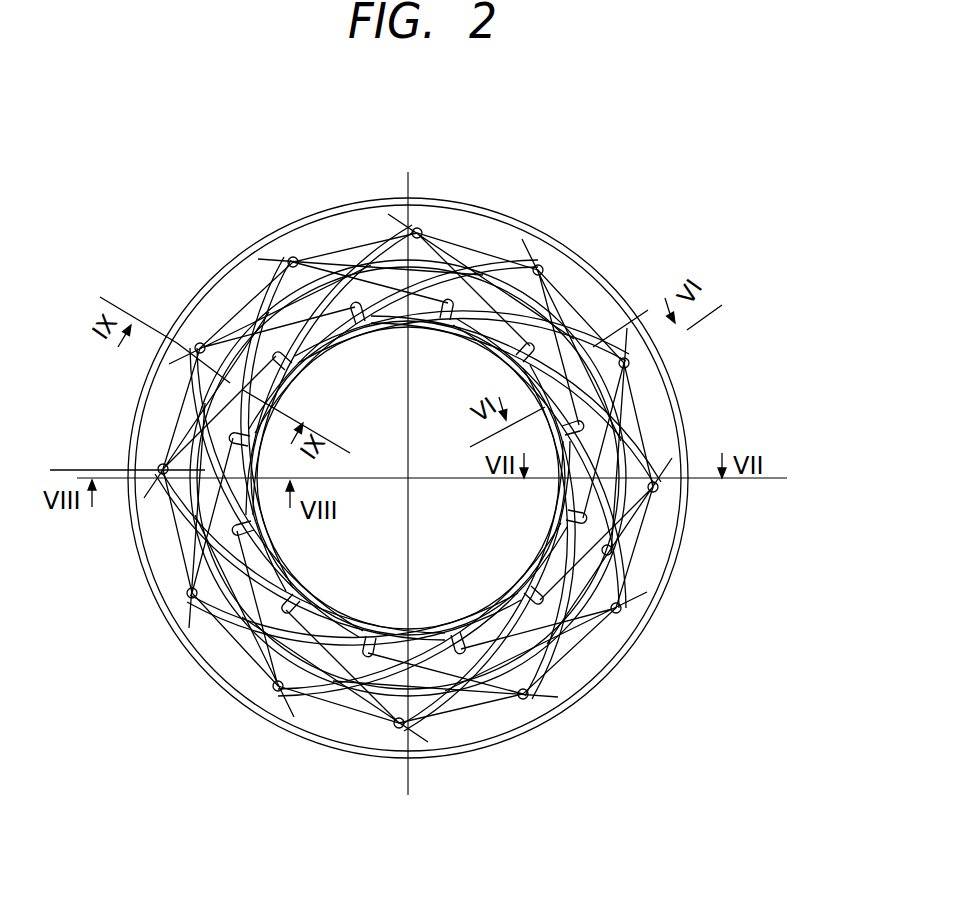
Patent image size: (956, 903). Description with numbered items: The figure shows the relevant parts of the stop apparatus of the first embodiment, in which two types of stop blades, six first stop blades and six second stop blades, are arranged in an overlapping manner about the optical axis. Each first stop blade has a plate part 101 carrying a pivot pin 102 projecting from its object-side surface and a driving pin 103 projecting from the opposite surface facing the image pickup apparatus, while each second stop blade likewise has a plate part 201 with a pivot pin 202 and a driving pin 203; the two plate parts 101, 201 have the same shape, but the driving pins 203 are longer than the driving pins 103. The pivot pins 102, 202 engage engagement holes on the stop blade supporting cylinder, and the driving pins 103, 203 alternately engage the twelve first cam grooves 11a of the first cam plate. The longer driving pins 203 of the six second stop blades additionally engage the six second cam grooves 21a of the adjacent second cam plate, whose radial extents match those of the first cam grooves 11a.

The first cam groove 11a is at (453, 252).
The second cam groove 21a is at (612, 553).
The plate part of first stop blade 101 is at (640, 443).
The pivot pin of first stop blade 102 is at (543, 265).
The driving pin of first stop blade 103 is at (633, 367).
The plate part of second stop blade 201 is at (590, 325).
The pivot pin of second stop blade 202 is at (633, 387).
The driving pin of second stop blade 203 is at (657, 485).